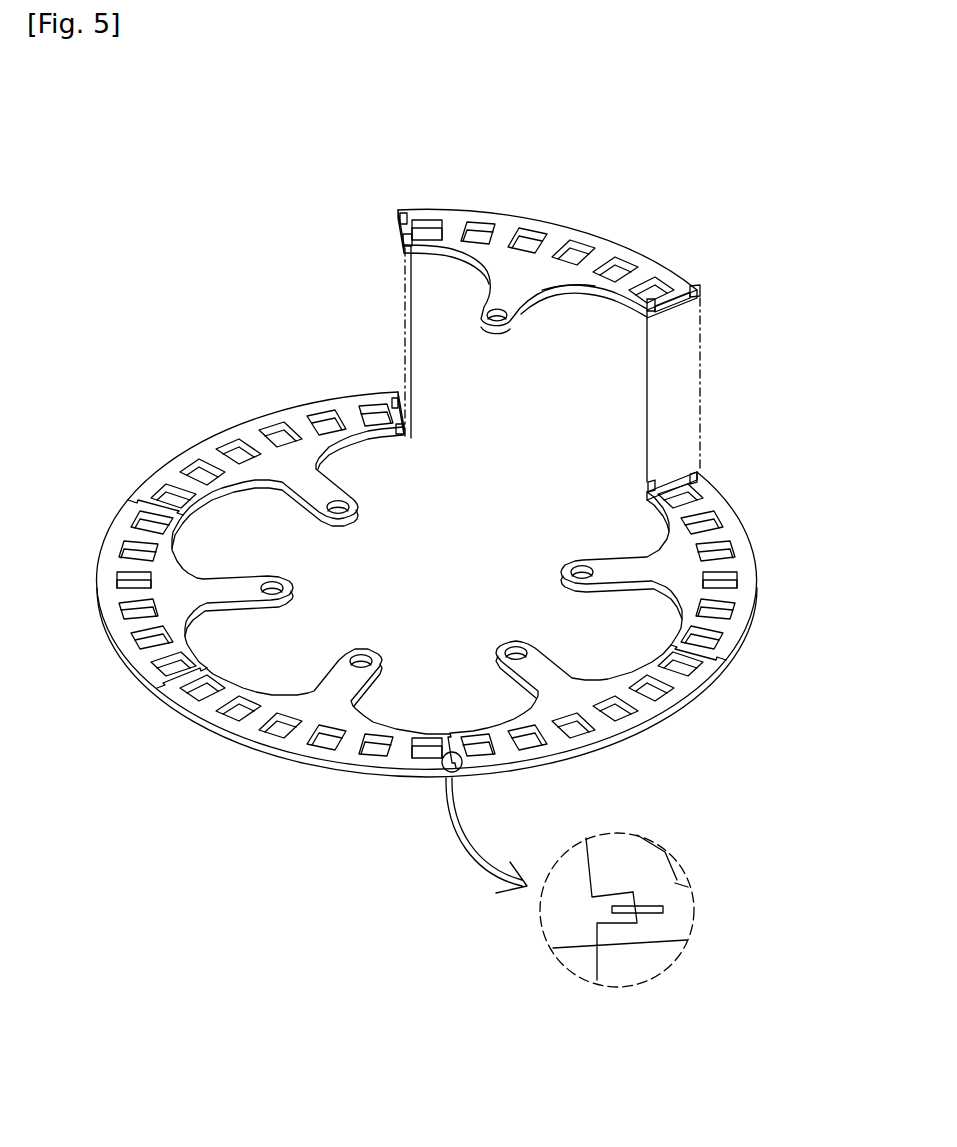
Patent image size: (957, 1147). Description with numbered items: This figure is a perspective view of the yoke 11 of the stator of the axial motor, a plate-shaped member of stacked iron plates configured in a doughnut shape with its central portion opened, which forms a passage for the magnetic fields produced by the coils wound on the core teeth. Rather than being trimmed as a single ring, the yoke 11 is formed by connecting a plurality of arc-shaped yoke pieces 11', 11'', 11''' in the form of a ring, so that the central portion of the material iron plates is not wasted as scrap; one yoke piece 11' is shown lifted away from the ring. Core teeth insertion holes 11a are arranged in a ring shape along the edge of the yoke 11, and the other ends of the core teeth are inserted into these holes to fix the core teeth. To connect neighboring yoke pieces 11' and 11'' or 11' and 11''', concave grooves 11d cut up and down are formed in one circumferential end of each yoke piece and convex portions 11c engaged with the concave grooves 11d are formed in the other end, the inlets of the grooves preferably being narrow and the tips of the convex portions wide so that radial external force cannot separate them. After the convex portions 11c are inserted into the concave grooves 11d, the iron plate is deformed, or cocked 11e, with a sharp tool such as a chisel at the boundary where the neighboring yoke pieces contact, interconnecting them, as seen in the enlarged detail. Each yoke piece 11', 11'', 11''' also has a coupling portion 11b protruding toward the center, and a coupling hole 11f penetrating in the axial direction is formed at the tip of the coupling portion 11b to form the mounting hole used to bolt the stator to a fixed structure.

The yoke 11 is at (415, 456).
The yoke piece 11' is at (547, 210).
The yoke piece 11'' is at (706, 566).
The yoke piece 11''' is at (277, 415).
The core teeth insertion hole 11a is at (578, 238).
The coupling portion 11b is at (547, 294).
The convex portion 11c is at (400, 214).
The concave groove 11d is at (699, 288).
The cocked portion 11e is at (663, 903).
The coupling hole 11f is at (493, 326).